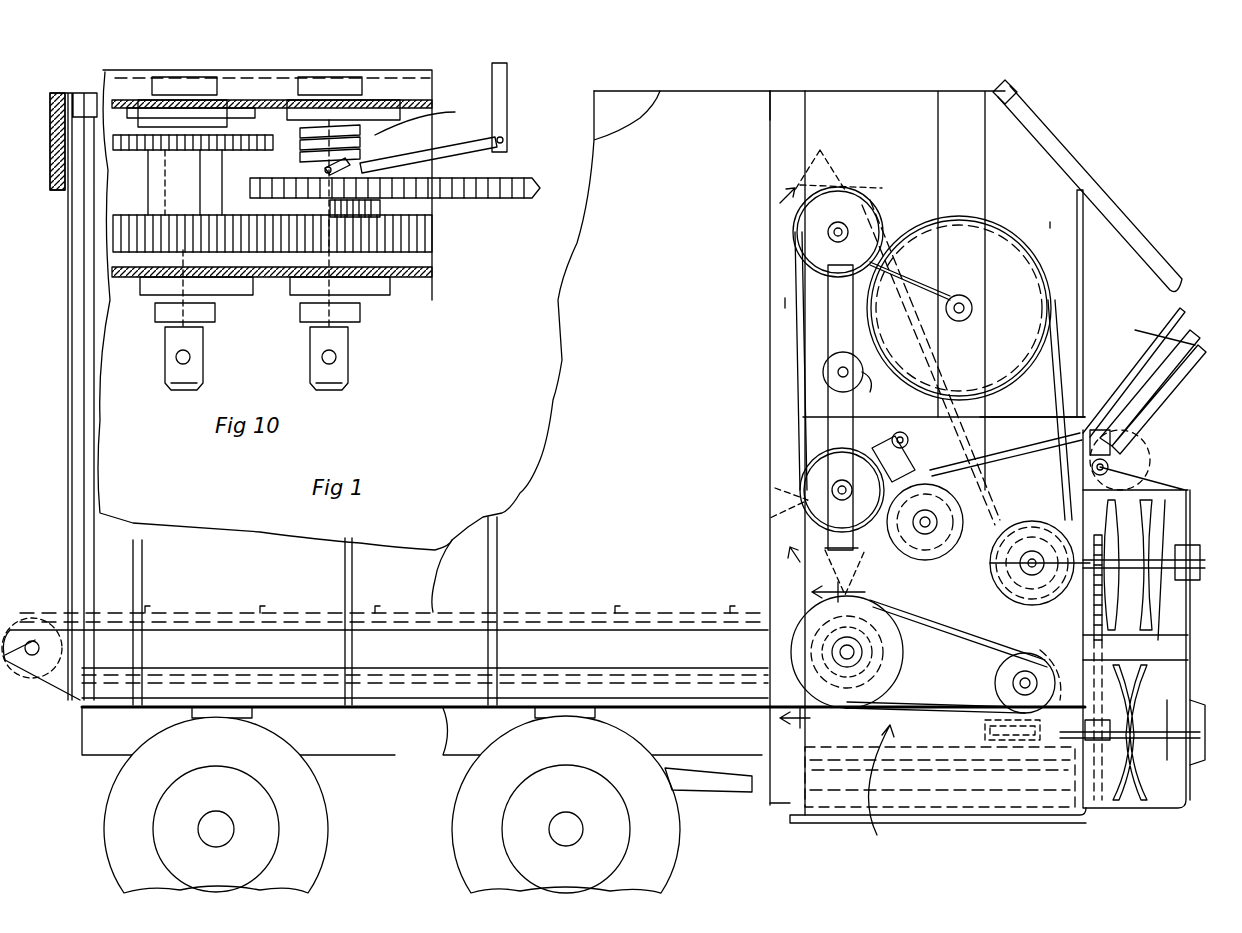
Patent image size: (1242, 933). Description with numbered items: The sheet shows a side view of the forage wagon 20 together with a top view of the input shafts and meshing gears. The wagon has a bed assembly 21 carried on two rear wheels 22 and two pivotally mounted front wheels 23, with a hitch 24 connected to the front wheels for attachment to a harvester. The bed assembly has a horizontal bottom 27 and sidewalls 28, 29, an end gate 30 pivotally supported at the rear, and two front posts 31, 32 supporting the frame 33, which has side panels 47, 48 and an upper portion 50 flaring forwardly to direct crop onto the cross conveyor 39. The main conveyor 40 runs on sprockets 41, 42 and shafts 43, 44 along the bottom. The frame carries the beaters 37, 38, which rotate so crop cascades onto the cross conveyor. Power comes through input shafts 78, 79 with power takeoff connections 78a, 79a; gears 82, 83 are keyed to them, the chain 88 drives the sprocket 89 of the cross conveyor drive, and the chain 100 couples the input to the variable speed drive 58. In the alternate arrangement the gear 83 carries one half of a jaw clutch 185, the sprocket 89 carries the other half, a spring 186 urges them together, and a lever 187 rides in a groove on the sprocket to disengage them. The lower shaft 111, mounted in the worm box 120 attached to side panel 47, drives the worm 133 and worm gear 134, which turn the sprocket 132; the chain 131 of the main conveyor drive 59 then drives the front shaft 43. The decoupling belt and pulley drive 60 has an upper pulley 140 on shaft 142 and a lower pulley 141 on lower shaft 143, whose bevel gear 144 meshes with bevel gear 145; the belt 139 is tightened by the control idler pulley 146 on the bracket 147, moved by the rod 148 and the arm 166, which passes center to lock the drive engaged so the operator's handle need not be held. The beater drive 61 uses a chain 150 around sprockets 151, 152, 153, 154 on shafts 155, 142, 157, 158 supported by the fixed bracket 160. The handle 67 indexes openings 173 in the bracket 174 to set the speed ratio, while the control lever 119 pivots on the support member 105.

In FIG. 1, the forage wagon 20 is at (360, 762).
In FIG. 1, the bed assembly 21 is at (470, 720).
In FIG. 1, the rear wheels 22 is at (325, 810).
In FIG. 1, the front wheels 23 is at (455, 830).
In FIG. 1, the hitch 24 is at (700, 792).
In FIG. 1, the horizontal bottom 27 is at (188, 614).
In FIG. 1, the sidewall 28 is at (650, 106).
In FIG. 1, the sidewall 29 is at (705, 103).
In FIG. 10, the end gate 30 is at (72, 245).
In FIG. 1, the front post 31 is at (800, 105).
In FIG. 1, the front post 32 is at (768, 160).
In FIG. 1, the frame 33 is at (1074, 121).
In FIG. 1, the beater 37 is at (775, 255).
In FIG. 1, the beater 38 is at (780, 505).
In FIG. 1, the cross conveyor 39 is at (845, 820).
In FIG. 1, the main conveyor 40 is at (628, 613).
In FIG. 1, the sprocket 41 is at (870, 630).
In FIG. 1, the sprocket 42 is at (40, 617).
In FIG. 1, the front shaft 43 is at (865, 652).
In FIG. 1, the shaft 44 is at (35, 684).
In FIG. 1, the side panel 47 is at (1120, 230).
In FIG. 1, the side panel 48 is at (1015, 98).
In FIG. 1, the upper portion of front panel 50 is at (1175, 303).
In FIG. 1, the variable speed drive 58 is at (1165, 521).
In FIG. 1, the main conveyor drive 59 is at (893, 788).
In FIG. 1, the decoupling belt and pulley drive 60 is at (1053, 244).
In FIG. 1, the beater drive 61 is at (772, 309).
In FIG. 1, the handle 67 is at (1150, 344).
In FIG. 10, the input shaft 78 is at (205, 333).
In FIG. 10, the power takeoff connection 78a is at (183, 390).
In FIG. 10, the input shaft 79 is at (350, 327).
In FIG. 10, the power takeoff connection 79a is at (345, 388).
In FIG. 10, the gear 82 is at (135, 280).
In FIG. 10, the gear 83 is at (410, 255).
In FIG. 10, the chain 88 is at (540, 190).
In FIG. 10, the sprocket 89 is at (395, 176).
In FIG. 10, the chain 100 is at (128, 140).
In FIG. 1, the support member 105 is at (1160, 660).
In FIG. 1, the lower shaft 111 is at (1088, 818).
In FIG. 1, the control lever 119 is at (1162, 606).
In FIG. 1, the worm box 120 is at (1055, 660).
In FIG. 1, the chain 131 is at (935, 627).
In FIG. 1, the sprocket 132 is at (995, 683).
In FIG. 1, the worm 133 is at (985, 736).
In FIG. 1, the worm gear 134 is at (960, 710).
In FIG. 1, the belt 139 is at (1060, 340).
In FIG. 1, the upper pulley 140 is at (988, 224).
In FIG. 1, the lower pulley 141 is at (1050, 520).
In FIG. 1, the shaft 142 is at (959, 308).
In FIG. 1, the lower shaft 143 is at (1005, 514).
In FIG. 1, the bevel gear 144 is at (985, 576).
In FIG. 1, the bevel gear 145 is at (1045, 592).
In FIG. 1, the control idler pulley 146 is at (910, 545).
In FIG. 1, the bracket 147 is at (918, 444).
In FIG. 1, the rod 148 is at (990, 457).
In FIG. 1, the chain 150 is at (800, 395).
In FIG. 1, the sprocket 151 is at (880, 215).
In FIG. 1, the sprocket 152 is at (945, 306).
In FIG. 1, the idler sprocket 153 is at (870, 380).
In FIG. 1, the sprocket 154 is at (805, 470).
In FIG. 1, the shaft 155 is at (850, 216).
In FIG. 1, the shaft 157 is at (825, 372).
In FIG. 1, the shaft 158 is at (810, 520).
In FIG. 1, the fixed bracket 160 is at (828, 310).
In FIG. 1, the arm 166 is at (1108, 430).
In FIG. 1, the openings 173 is at (1130, 434).
In FIG. 1, the bracket 174 is at (1140, 454).
In FIG. 10, the jaw clutch 185 is at (400, 210).
In FIG. 10, the spring 186 is at (415, 125).
In FIG. 10, the lever 187 is at (505, 80).